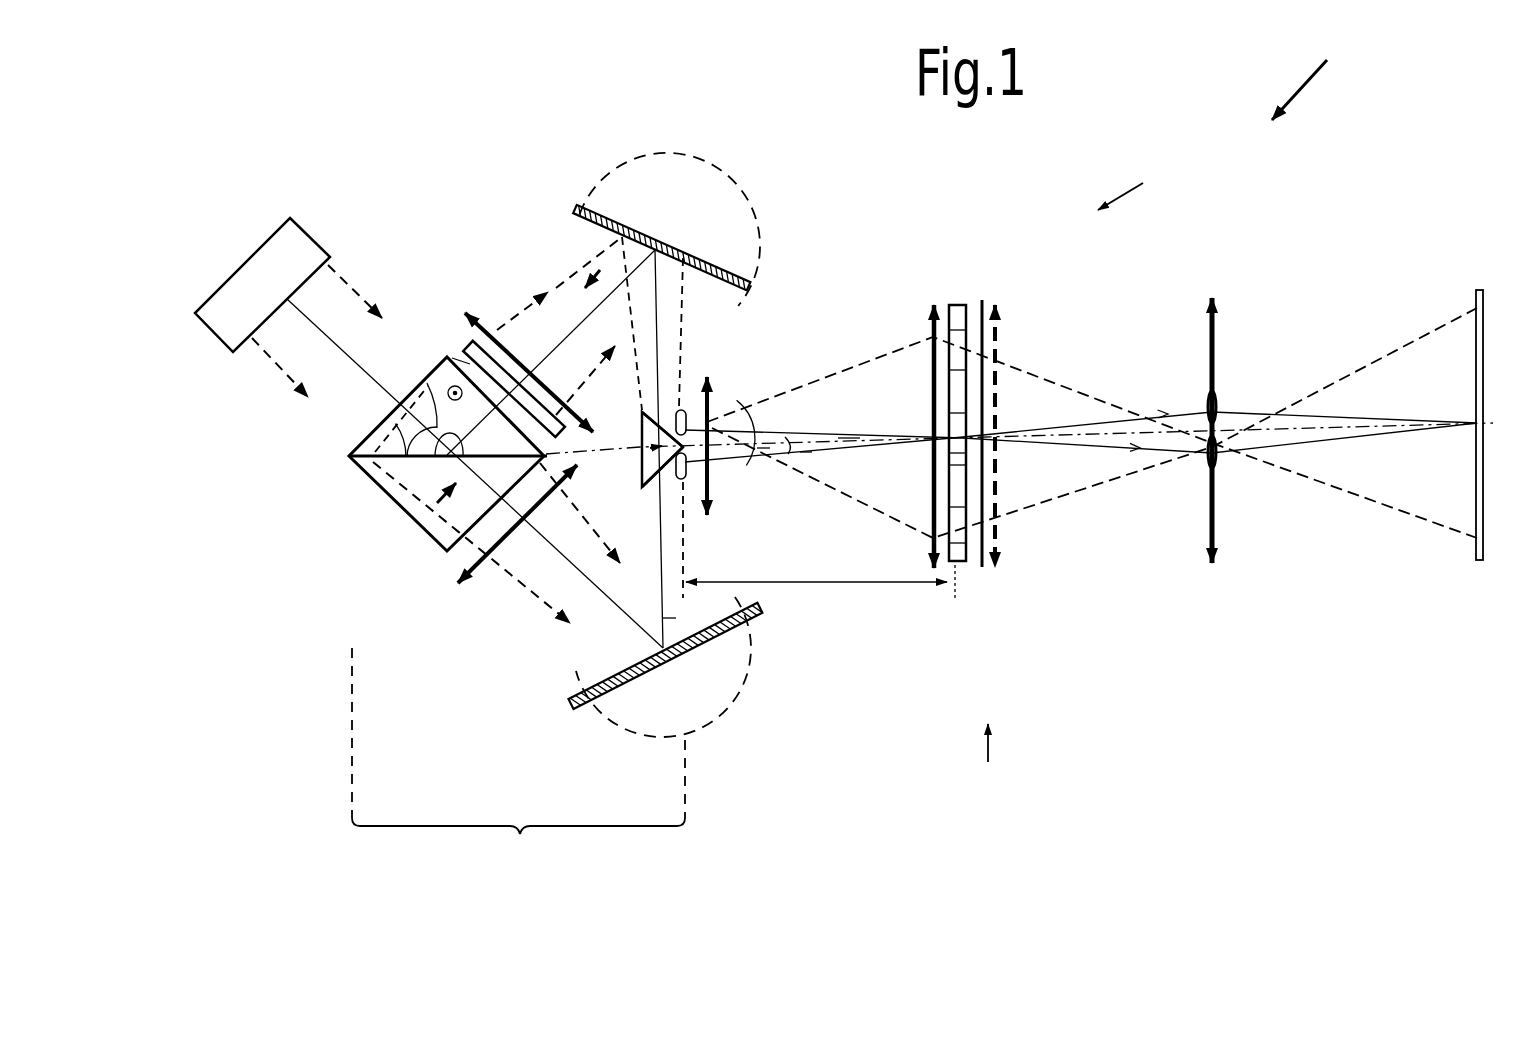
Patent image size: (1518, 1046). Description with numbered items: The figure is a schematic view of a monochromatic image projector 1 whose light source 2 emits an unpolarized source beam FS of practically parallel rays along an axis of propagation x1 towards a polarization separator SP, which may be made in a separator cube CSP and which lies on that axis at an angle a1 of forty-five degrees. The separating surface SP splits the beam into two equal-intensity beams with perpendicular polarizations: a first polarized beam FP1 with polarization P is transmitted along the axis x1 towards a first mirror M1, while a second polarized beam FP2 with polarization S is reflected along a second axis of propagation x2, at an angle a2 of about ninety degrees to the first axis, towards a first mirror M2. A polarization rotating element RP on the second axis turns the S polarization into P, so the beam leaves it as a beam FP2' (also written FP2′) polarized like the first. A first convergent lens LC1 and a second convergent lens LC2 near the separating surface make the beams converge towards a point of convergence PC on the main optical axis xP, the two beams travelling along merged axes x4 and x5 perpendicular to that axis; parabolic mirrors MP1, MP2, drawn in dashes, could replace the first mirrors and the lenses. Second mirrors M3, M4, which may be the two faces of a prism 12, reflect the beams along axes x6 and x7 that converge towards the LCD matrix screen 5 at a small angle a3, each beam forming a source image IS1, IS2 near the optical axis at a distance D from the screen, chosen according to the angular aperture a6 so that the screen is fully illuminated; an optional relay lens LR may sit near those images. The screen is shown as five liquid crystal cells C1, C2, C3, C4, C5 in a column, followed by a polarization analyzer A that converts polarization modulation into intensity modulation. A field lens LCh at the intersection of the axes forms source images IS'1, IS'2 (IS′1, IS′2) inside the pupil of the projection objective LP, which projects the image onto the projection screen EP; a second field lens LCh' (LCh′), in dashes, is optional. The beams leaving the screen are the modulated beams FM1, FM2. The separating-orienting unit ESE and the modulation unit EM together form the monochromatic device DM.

The image projector 1 is at (1299, 90).
The light source 2 is at (205, 325).
The source beam FS is at (280, 368).
The axis of propagation x1 is at (347, 360).
The angle a1 is at (393, 433).
The angle a2 is at (427, 383).
The direction of polarization S is at (453, 386).
The direction of polarization P is at (438, 504).
The polarization separator SP is at (375, 481).
The separator cube CSP is at (390, 497).
The first polarized beam FP1 is at (463, 580).
The first convergent lens LC1 is at (463, 590).
The polarization rotating element RP is at (467, 340).
The second convergent lens LC2 is at (477, 340).
The second polarized beam FP2 is at (495, 362).
The second polarized beam after rotation FP2' is at (557, 283).
The second polarized beam after rotation FP2′ is at (557, 283).
The second axis of propagation x2 is at (558, 320).
The parabolic mirror MP2 is at (768, 176).
The first mirror M2 is at (653, 244).
The axis of propagation x5 is at (659, 322).
The first mirror M1 is at (650, 676).
The parabolic mirror MP1 is at (690, 738).
The separating-orienting unit ESE is at (518, 762).
The point of convergence PC is at (652, 484).
The prism 12 is at (642, 466).
The second mirror M3 is at (662, 478).
The second mirror M4 is at (650, 420).
The source image IS1 is at (683, 474).
The source image IS2 is at (684, 405).
The relay lens LR is at (708, 378).
The angular aperture a6 is at (738, 400).
The angle a3 is at (786, 437).
The axis of propagation x7 is at (840, 438).
The axis of propagation x6 is at (810, 454).
The main optical axis xP is at (757, 448).
The axis of propagation x4 is at (664, 618).
The distance D is at (844, 584).
The field lens LCh is at (901, 405).
The liquid crystal cell C1 is at (966, 318).
The liquid crystal cell C2 is at (955, 395).
The liquid crystal cell C3 is at (955, 468).
The liquid crystal cell C4 is at (955, 500).
The liquid crystal cell C5 is at (965, 562).
The LCD matrix screen 5 is at (955, 598).
The polarization analyzer A is at (994, 303).
The second field lens LCh' is at (1038, 454).
The second field lens LCh′ is at (1038, 454).
The first modulated beam FM1 is at (1150, 414).
The second modulated beam FM2 is at (1046, 448).
The projection objective LP is at (1212, 300).
The source image IS'1 is at (1173, 370).
The source image IS'2 is at (1184, 479).
The source image IS′1 is at (1173, 370).
The source image IS′2 is at (1184, 479).
The projection screen EP is at (1481, 562).
The modulation unit EM is at (968, 753).
The monochromatic device DM is at (1120, 186).